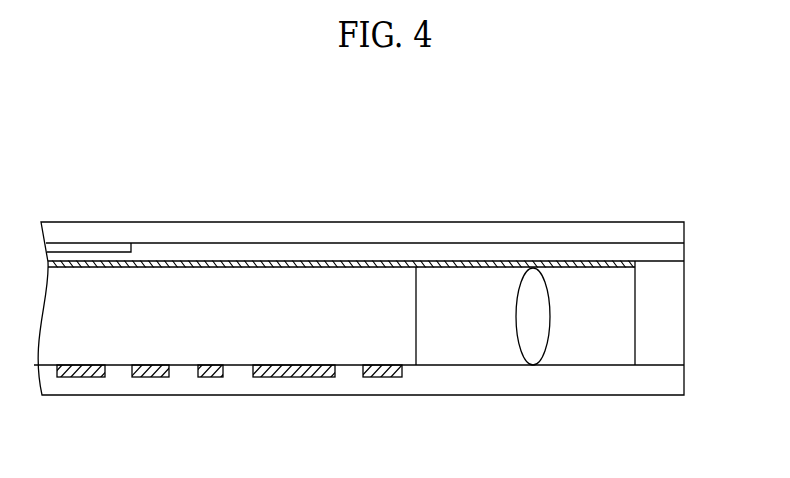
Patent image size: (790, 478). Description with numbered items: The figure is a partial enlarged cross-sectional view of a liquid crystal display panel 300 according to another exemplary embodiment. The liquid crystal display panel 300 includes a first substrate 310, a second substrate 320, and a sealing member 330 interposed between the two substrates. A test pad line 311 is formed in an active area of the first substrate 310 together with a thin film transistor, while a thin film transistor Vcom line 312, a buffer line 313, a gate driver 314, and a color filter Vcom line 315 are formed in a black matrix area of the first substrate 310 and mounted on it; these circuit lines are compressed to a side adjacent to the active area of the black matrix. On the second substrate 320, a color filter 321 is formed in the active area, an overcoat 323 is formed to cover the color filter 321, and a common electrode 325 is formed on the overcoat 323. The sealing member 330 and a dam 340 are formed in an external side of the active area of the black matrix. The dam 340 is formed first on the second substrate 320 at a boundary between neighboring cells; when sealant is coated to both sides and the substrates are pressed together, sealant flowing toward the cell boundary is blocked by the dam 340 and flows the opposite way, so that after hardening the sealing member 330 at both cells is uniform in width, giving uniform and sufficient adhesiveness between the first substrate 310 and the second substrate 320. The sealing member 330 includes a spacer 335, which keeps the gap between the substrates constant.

The liquid crystal display panel 300 is at (338, 123).
The first substrate 310 is at (479, 382).
The test pad line 311 is at (77, 377).
The thin film transistor Vcom line 312 is at (150, 377).
The buffer line 313 is at (208, 377).
The gate driver 314 is at (290, 377).
The color filter Vcom line 315 is at (378, 377).
The second substrate 320 is at (455, 232).
The color filter 321 is at (95, 248).
The overcoat 323 is at (214, 250).
The common electrode 325 is at (337, 262).
The sealing member 330 is at (426, 318).
The spacer 335 is at (540, 342).
The dam 340 is at (672, 318).